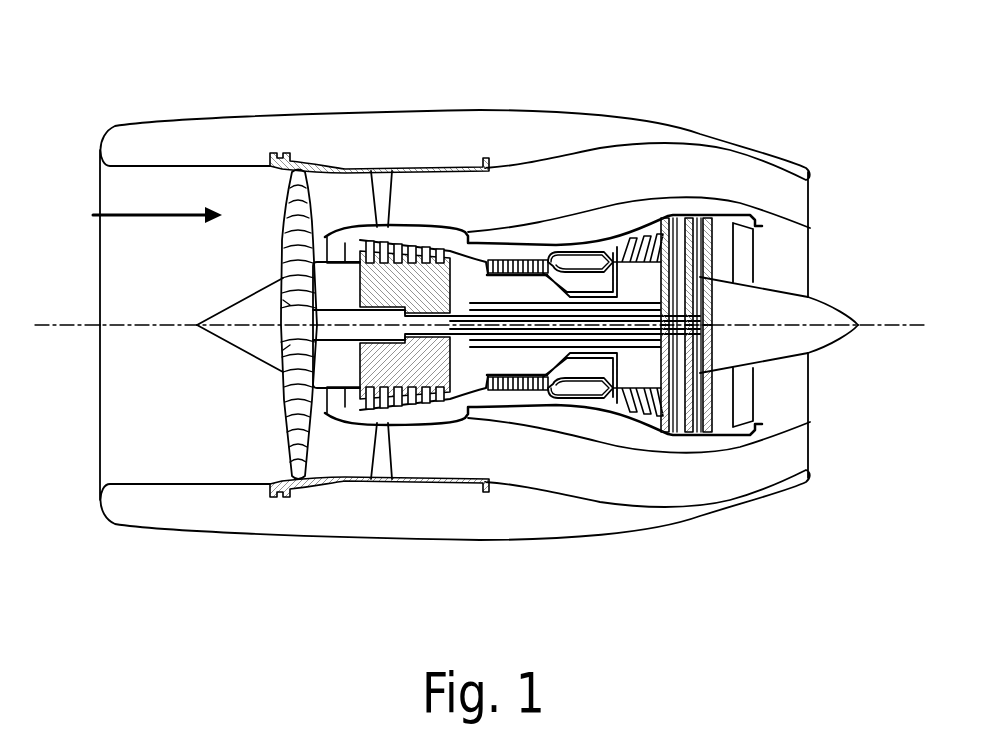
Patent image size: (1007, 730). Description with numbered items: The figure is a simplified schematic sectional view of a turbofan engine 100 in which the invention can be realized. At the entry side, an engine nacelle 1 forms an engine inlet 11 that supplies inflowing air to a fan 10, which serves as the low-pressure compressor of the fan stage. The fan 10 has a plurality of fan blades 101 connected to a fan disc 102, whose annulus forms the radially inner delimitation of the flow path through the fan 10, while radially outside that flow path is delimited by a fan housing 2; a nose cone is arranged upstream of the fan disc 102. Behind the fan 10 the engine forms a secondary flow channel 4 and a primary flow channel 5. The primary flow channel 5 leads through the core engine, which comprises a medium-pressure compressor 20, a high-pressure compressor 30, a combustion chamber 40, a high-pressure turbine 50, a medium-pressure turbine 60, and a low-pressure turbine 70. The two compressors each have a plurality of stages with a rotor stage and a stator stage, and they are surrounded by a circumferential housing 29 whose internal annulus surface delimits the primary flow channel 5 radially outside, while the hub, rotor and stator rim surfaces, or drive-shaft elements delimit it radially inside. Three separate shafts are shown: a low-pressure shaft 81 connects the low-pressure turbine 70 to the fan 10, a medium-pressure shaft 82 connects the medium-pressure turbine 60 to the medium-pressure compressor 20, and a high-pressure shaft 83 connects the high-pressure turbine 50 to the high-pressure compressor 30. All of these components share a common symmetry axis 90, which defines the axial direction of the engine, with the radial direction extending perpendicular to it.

The engine nacelle 1 is at (147, 150).
The fan housing 2 is at (300, 195).
The secondary flow channel 4 is at (335, 195).
The primary flow channel 5 is at (354, 243).
The fan 10 is at (273, 224).
The engine inlet 11 is at (128, 172).
The medium-pressure compressor 20 is at (408, 243).
The circumferential housing 29 is at (454, 233).
The high-pressure compressor 30 is at (515, 292).
The combustion chamber 40 is at (578, 256).
The high-pressure turbine 50 is at (636, 241).
The medium-pressure turbine 60 is at (663, 225).
The low-pressure turbine 70 is at (721, 232).
The low-pressure shaft 81 is at (538, 328).
The medium-pressure shaft 82 is at (583, 342).
The high-pressure shaft 83 is at (606, 362).
The symmetry axis 90 is at (892, 323).
The turbofan engine 100 is at (494, 104).
The fan blades 101 is at (285, 420).
The fan disc 102 is at (280, 370).